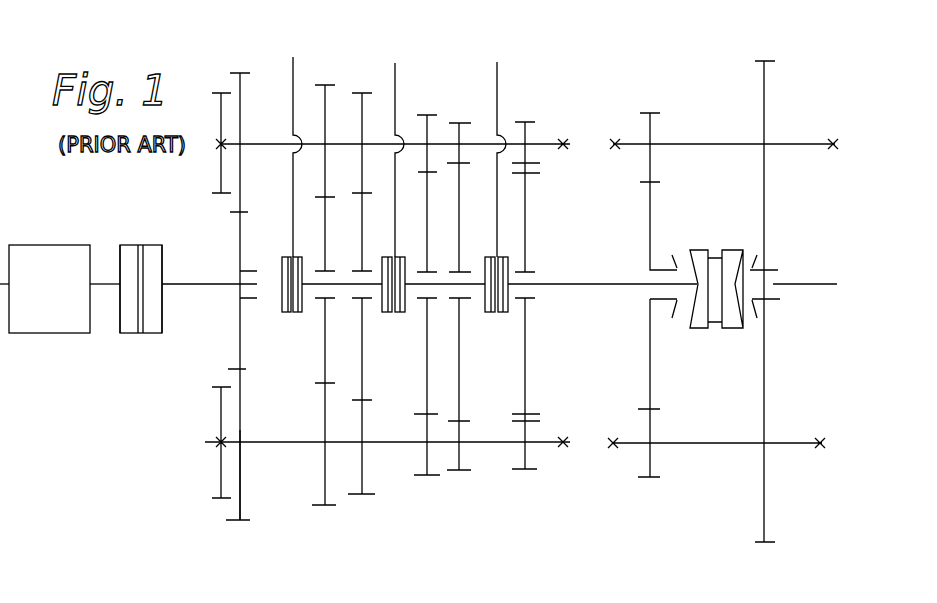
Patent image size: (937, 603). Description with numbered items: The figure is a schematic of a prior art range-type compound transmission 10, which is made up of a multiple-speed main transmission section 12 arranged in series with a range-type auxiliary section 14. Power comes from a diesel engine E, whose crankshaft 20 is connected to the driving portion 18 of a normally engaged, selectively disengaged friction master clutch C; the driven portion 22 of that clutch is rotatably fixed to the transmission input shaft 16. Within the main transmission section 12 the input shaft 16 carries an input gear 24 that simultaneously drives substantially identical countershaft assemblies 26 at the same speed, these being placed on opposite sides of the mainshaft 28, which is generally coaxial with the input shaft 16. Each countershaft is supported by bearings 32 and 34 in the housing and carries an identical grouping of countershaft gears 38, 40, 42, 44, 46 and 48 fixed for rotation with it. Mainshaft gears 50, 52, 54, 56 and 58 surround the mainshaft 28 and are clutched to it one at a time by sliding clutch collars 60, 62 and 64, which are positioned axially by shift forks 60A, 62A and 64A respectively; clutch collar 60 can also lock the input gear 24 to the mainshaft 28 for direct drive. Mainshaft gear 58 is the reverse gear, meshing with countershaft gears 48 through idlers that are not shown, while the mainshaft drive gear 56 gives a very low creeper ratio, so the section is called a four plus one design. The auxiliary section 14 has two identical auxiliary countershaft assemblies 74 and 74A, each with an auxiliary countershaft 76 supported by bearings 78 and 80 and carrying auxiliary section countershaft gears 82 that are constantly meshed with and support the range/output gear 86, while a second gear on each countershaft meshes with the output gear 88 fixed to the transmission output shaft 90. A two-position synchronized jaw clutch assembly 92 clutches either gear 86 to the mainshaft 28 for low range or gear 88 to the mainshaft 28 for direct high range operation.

The diesel engine E is at (45, 289).
The friction master clutch C is at (153, 245).
The compound transmission 10 is at (605, 105).
The main transmission section 12 is at (370, 75).
The auxiliary section 14 is at (715, 100).
The input shaft 16 is at (193, 283).
The driving portion 18 is at (130, 333).
The engine crankshaft 20 is at (103, 283).
The driven portion 22 is at (145, 333).
The input gear 24 is at (240, 262).
The countershaft assembly 26 is at (252, 143).
The mainshaft 28 is at (602, 290).
The bearing 32 is at (215, 443).
The bearing 34 is at (565, 448).
The countershaft gear 38 is at (240, 495).
The countershaft gear 40 is at (322, 480).
The countershaft gear 42 is at (362, 478).
The countershaft gear 44 is at (425, 455).
The countershaft gear 46 is at (463, 455).
The countershaft gear 48 is at (520, 455).
The mainshaft gear 50 is at (322, 374).
The mainshaft gear 52 is at (366, 378).
The mainshaft gear 54 is at (425, 373).
The mainshaft drive gear 56 is at (460, 372).
The mainshaft gear 58 is at (523, 376).
The sliding clutch collar 60 is at (282, 302).
The shift fork 60A is at (292, 210).
The sliding clutch collar 62 is at (408, 255).
The shift fork 62A is at (397, 110).
The sliding clutch collar 64 is at (487, 255).
The shift fork 64A is at (499, 110).
The auxiliary countershaft assembly 74 is at (697, 141).
The auxiliary countershaft assembly 74A is at (718, 445).
The auxiliary countershaft 76 is at (752, 148).
The bearing 78 is at (612, 152).
The bearing 80 is at (835, 140).
The auxiliary section countershaft gear 82 is at (653, 125).
The range/output gear 86 is at (650, 210).
The output gear 88 is at (762, 240).
The transmission output shaft 90 is at (800, 282).
The synchronized jaw clutch assembly 92 is at (700, 332).